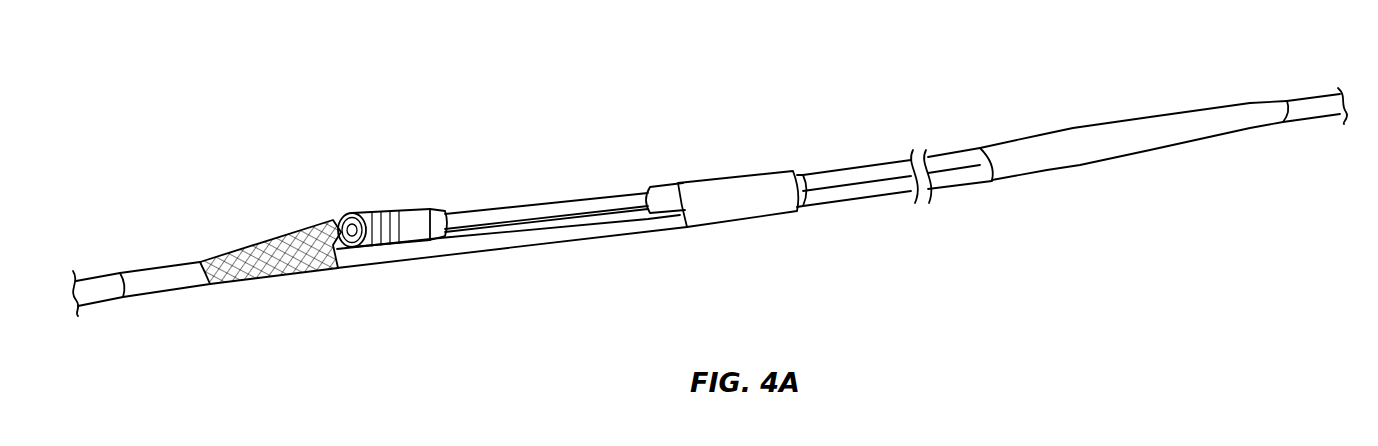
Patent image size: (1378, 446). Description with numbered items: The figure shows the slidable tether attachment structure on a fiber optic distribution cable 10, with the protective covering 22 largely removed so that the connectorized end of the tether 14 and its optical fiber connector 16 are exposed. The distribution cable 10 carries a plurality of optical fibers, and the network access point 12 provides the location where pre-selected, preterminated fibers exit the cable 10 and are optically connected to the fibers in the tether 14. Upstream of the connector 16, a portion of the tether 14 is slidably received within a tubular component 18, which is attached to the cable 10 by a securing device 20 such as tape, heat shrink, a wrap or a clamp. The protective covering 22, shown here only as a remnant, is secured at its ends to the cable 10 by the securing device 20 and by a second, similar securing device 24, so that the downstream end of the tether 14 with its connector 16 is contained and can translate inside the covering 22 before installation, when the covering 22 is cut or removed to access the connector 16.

The distribution cable 10 is at (103, 294).
The network access point 12 is at (1108, 148).
The tether 14 is at (553, 205).
The optical fiber connector 16 is at (390, 220).
The tubular component 18 is at (667, 195).
The securing device 20 is at (727, 195).
The protective covering 22 is at (278, 237).
The securing device 24 is at (168, 283).